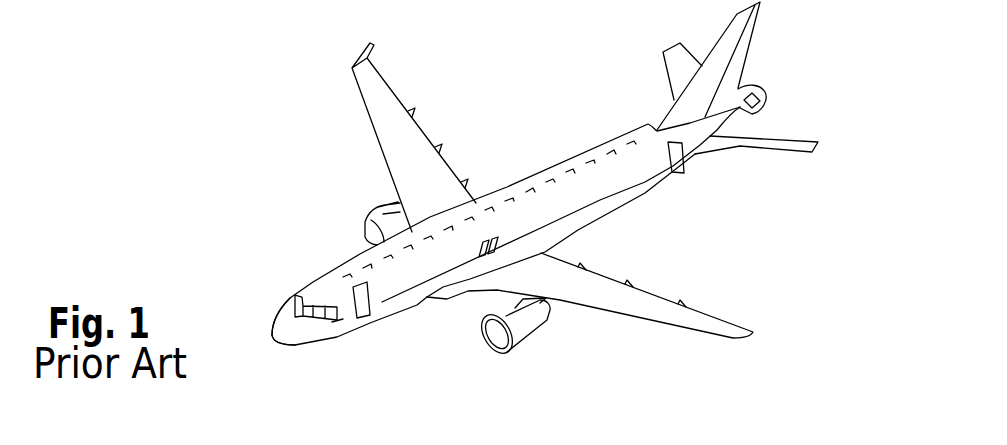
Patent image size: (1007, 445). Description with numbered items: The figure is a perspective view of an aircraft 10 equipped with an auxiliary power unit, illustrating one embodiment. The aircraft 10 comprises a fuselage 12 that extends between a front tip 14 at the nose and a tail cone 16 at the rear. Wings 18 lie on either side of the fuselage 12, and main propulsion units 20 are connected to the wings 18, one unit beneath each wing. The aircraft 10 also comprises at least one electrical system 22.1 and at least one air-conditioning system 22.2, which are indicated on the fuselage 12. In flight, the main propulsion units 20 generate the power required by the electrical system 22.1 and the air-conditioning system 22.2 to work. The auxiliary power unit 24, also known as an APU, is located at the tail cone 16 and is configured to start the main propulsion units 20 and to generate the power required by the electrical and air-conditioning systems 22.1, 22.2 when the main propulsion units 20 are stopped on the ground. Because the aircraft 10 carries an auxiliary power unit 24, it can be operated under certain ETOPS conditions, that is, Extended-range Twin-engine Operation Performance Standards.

The aircraft 10 is at (506, 192).
The fuselage 12 is at (506, 220).
The front tip 14 is at (271, 337).
The tail cone 16 is at (770, 80).
The wings 18 is at (413, 137).
The main propulsion units 20 is at (366, 219).
The electrical system 22.1 is at (411, 294).
The air-conditioning system 22.2 is at (555, 165).
The auxiliary power unit 24 is at (764, 102).